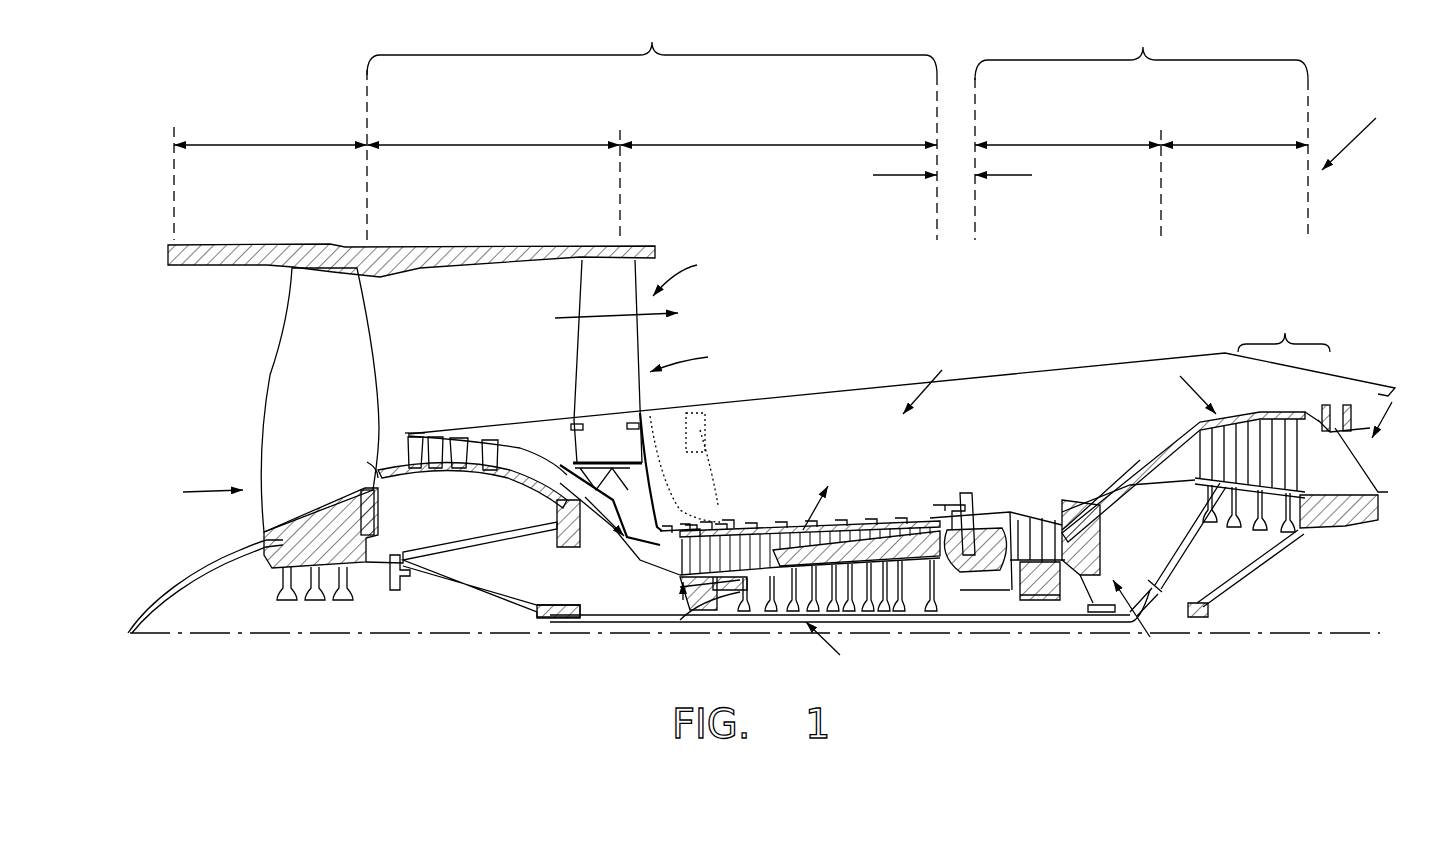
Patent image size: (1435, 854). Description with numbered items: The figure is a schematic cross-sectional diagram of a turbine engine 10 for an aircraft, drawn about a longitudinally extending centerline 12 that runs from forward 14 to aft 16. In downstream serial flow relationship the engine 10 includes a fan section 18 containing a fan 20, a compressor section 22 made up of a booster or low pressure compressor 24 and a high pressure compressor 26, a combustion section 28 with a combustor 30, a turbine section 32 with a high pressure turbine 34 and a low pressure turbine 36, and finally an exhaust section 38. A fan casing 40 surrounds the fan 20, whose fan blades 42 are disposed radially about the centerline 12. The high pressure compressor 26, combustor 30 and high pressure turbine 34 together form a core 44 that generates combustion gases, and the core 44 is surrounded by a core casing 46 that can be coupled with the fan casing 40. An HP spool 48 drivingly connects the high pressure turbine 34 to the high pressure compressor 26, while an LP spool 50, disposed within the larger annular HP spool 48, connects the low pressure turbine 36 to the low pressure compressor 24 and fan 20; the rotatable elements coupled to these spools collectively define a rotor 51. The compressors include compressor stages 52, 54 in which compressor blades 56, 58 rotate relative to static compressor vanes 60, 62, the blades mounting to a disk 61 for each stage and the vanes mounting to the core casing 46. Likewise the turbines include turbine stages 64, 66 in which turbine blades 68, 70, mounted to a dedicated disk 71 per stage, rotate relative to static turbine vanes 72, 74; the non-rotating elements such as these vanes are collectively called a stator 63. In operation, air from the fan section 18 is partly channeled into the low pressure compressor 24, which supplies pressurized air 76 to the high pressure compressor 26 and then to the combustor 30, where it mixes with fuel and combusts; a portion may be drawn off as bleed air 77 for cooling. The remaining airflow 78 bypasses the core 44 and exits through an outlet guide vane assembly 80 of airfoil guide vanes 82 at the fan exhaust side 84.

The engine 10 is at (1366, 138).
The centerline 12 is at (250, 634).
The forward 14 is at (204, 374).
The aft 16 is at (1406, 466).
The fan section 18 is at (270, 145).
The fan 20 is at (196, 492).
The compressor section 22 is at (652, 40).
The low pressure compressor 24 is at (500, 145).
The high pressure compressor 26 is at (785, 145).
The combustion section 28 is at (887, 176).
The combustor 30 is at (968, 505).
The turbine section 32 is at (1143, 45).
The high pressure turbine 34 is at (1068, 145).
The low pressure turbine 36 is at (1240, 145).
The exhaust section 38 is at (1347, 458).
The fan casing 40 is at (400, 246).
The fan blades 42 is at (352, 318).
The core 44 is at (901, 393).
The core casing 46 is at (1125, 472).
The HP spool 48 is at (940, 612).
The LP spool 50 is at (552, 628).
The rotor 51 is at (880, 628).
The compressor stages 52 is at (467, 404).
The compressor stages 54 is at (770, 500).
The compressor blades 56 is at (433, 435).
The compressor blades 58 is at (708, 538).
The static compressor vanes 60 is at (415, 435).
The disk 61 is at (452, 482).
The static compressor vanes 62 is at (690, 528).
The stator 63 is at (683, 600).
The turbine stages 64 is at (1175, 496).
The turbine stages 66 is at (1285, 332).
The turbine blades 68 is at (1018, 505).
The turbine blades 70 is at (1278, 418).
The disk 71 is at (1030, 598).
The static turbine vanes 72 is at (1022, 518).
The static turbine vanes 74 is at (1270, 425).
The pressurized air 76 is at (592, 548).
The bleed air 77 is at (800, 500).
The airflow 78 is at (555, 317).
The outlet guide vane assembly 80 is at (695, 358).
The airfoil guide vanes 82 is at (578, 352).
The fan exhaust side 84 is at (693, 276).